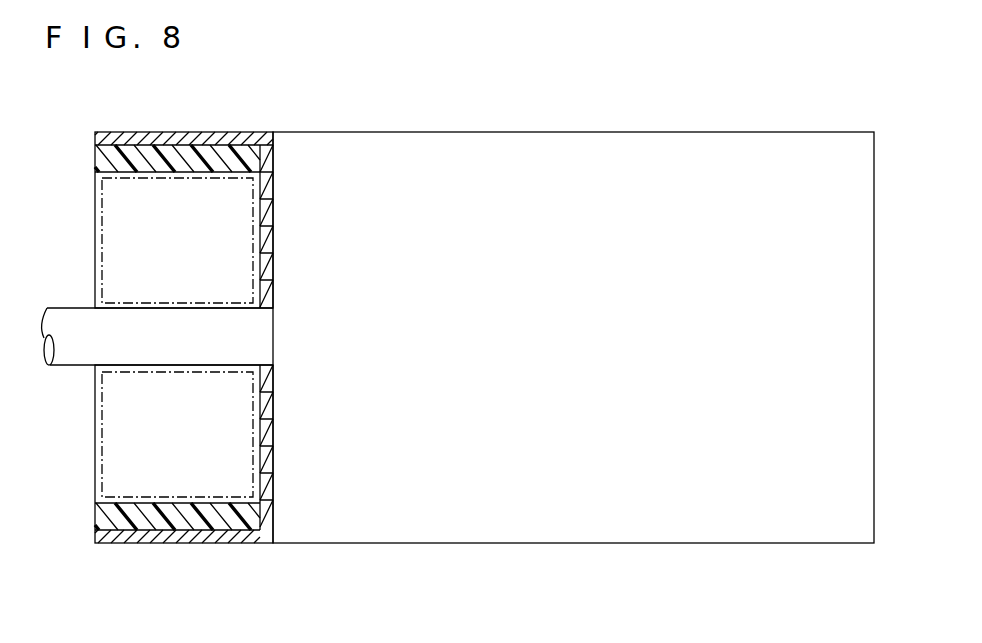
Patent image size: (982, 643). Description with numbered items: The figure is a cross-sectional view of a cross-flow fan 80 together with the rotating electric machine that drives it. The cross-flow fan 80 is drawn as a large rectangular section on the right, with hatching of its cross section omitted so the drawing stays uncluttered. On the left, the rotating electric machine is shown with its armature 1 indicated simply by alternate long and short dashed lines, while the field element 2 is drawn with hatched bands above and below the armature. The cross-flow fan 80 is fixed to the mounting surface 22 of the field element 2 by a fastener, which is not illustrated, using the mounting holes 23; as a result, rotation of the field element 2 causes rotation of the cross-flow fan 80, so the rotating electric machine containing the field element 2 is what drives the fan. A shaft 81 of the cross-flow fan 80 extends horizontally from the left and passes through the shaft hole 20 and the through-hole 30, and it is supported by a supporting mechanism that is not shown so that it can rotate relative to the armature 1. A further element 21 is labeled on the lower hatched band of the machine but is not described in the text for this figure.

The armature 1 is at (95, 468).
The field element 2 is at (143, 545).
The shaft hole 20 is at (272, 287).
The coil 21 is at (208, 528).
The mounting surface 22 is at (268, 420).
The mounting holes 23 is at (272, 203).
The through-hole 30 is at (237, 313).
The cross-flow fan 80 is at (435, 543).
The shaft 81 is at (68, 308).